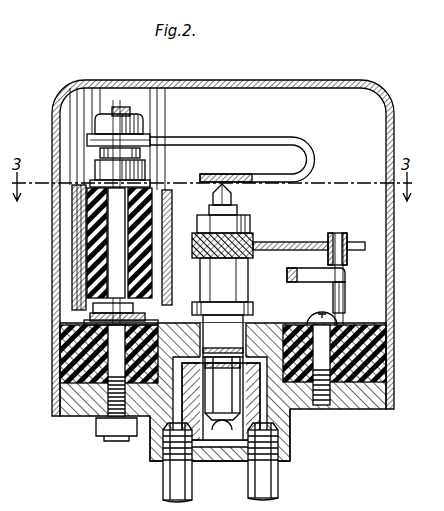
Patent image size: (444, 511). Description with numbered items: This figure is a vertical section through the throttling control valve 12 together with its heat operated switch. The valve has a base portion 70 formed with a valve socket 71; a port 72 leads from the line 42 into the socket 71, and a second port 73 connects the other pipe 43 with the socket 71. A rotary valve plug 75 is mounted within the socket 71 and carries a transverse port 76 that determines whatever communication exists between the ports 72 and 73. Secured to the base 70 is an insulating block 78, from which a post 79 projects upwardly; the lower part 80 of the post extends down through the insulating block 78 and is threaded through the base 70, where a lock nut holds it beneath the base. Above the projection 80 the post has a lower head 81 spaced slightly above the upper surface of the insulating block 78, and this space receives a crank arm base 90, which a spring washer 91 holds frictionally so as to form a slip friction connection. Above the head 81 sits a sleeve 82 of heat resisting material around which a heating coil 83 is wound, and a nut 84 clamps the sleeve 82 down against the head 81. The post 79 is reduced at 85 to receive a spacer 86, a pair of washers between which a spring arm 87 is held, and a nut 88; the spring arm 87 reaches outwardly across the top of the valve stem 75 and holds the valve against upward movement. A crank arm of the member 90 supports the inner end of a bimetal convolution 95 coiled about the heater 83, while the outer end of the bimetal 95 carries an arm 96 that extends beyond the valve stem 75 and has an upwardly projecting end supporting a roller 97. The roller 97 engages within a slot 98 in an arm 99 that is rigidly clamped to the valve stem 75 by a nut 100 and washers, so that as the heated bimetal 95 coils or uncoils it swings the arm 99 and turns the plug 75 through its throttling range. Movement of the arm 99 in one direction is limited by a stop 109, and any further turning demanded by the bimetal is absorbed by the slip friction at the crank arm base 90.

The throttling control valve 12 is at (82, 76).
The reduced portion of the post 85 is at (119, 107).
The nut 88 is at (100, 124).
The spring arm 87 is at (207, 137).
The spacer 86 is at (140, 153).
The nut 84 is at (136, 168).
The sleeve 82 is at (95, 218).
The post 79 is at (116, 255).
The heating coil 83 is at (85, 278).
The bimetal convolution 95 is at (171, 272).
The lower head 81 is at (100, 308).
The spring washer 91 is at (92, 318).
The crank arm base 90 is at (150, 323).
The lower part of the post 80 is at (62, 350).
The insulating block 78 is at (78, 400).
The port 72 is at (170, 421).
The line 42 is at (170, 485).
The valve socket 71 is at (226, 445).
The pipe 43 is at (278, 478).
The port 73 is at (262, 418).
The base portion 70 is at (353, 402).
The port 76 is at (213, 354).
The rotary valve plug 75 is at (218, 342).
The nut 100 is at (250, 228).
The arm 99 is at (296, 243).
The roller 97 is at (347, 238).
The slot 98 is at (355, 252).
The arm 96 is at (302, 271).
The stop 109 is at (345, 312).